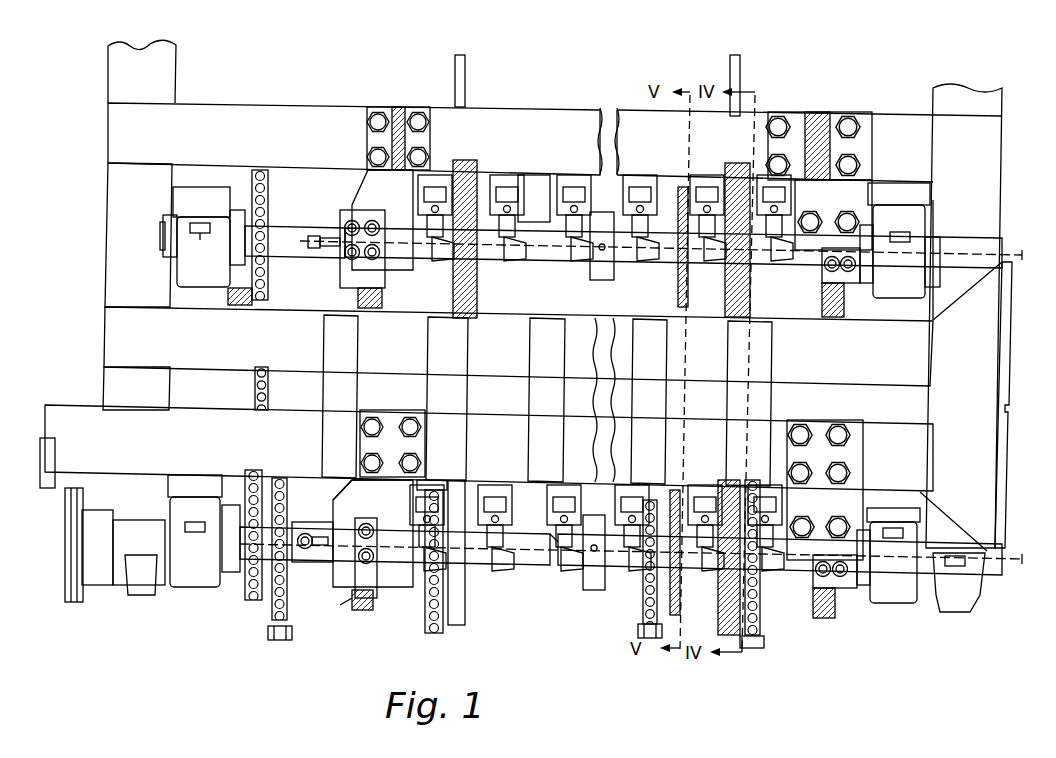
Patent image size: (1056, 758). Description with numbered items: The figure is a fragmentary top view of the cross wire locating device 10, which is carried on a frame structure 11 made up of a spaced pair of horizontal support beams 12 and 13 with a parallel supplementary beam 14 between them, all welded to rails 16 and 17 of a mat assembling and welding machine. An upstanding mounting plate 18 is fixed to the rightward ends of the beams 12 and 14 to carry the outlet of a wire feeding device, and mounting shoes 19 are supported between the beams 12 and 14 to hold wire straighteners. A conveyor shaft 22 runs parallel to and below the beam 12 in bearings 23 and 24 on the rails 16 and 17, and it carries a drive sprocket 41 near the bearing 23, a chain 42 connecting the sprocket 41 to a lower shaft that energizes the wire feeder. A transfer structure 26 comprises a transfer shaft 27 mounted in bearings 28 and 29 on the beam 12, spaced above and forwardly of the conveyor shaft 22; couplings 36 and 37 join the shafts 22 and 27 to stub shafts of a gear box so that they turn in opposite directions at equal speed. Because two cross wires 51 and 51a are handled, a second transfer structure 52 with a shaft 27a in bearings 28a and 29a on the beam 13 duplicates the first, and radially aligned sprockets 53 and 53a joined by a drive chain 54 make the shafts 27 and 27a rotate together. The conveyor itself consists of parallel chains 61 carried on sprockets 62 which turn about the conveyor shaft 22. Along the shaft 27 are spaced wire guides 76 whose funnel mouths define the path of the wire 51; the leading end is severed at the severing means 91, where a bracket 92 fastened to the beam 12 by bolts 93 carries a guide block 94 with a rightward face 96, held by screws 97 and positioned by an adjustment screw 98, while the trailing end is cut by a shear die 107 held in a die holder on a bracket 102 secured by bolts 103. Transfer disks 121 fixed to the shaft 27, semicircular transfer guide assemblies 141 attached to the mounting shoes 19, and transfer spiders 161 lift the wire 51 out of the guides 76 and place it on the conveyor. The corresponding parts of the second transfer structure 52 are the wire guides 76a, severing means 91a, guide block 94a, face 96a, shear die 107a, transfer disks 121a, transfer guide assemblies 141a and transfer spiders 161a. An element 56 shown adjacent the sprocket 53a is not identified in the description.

The cross wire locating device 10 is at (950, 55).
The frame structure 11 is at (139, 100).
The support beam 12 is at (95, 410).
The support beam 13 is at (107, 129).
The supplementary beam 14 is at (104, 320).
The rail 16 is at (107, 195).
The rail 17 is at (995, 236).
The mounting plate 18 is at (1008, 303).
The mounting shoe 19 is at (322, 350).
The conveyor shaft 22 is at (535, 578).
The bearing 23 is at (140, 590).
The bearing 24 is at (958, 612).
The transfer structure 26 is at (325, 510).
The transfer shaft 27 is at (142, 527).
The shaft 27a is at (300, 258).
The bearing 28 is at (190, 580).
The bearing 28a is at (190, 262).
The bearing 29 is at (900, 605).
The bearing 29a is at (935, 262).
The coupling 36 is at (97, 585).
The coupling 37 is at (65, 518).
The drive sprocket 41 is at (272, 605).
The chain 42 is at (276, 640).
The cross wire 51 is at (475, 578).
The cross wire 51a is at (540, 258).
The transfer structure 52 is at (537, 205).
The sprocket 53 is at (245, 585).
The sprocket 53a is at (270, 206).
The drive chain 54 is at (268, 385).
The chain guide block 56 is at (228, 297).
The conveyor chain 61 is at (638, 633).
The sprocket 62 is at (643, 610).
The wire guide 76 is at (540, 497).
The wire guide 76a is at (652, 198).
The severing means 91 is at (340, 587).
The severing means 91a is at (352, 192).
The bracket 92 is at (412, 430).
The bolts 93 is at (410, 418).
The guide block 94 is at (356, 605).
The guide block 94a is at (345, 280).
The rightward face 96 is at (370, 608).
The rightward face 96a is at (382, 298).
The screws 97 is at (372, 518).
The adjustment screw 98 is at (292, 541).
The bracket 102 is at (850, 448).
The bolts 103 is at (840, 425).
The shear die 107 is at (860, 555).
The shear die 107a is at (862, 262).
The transfer disk 121 is at (672, 500).
The transfer disk 121a is at (682, 300).
The transfer guide assembly 141 is at (457, 630).
The transfer guide assembly 141a is at (460, 275).
The transfer spider 161 is at (592, 590).
The transfer spider 161a is at (596, 282).